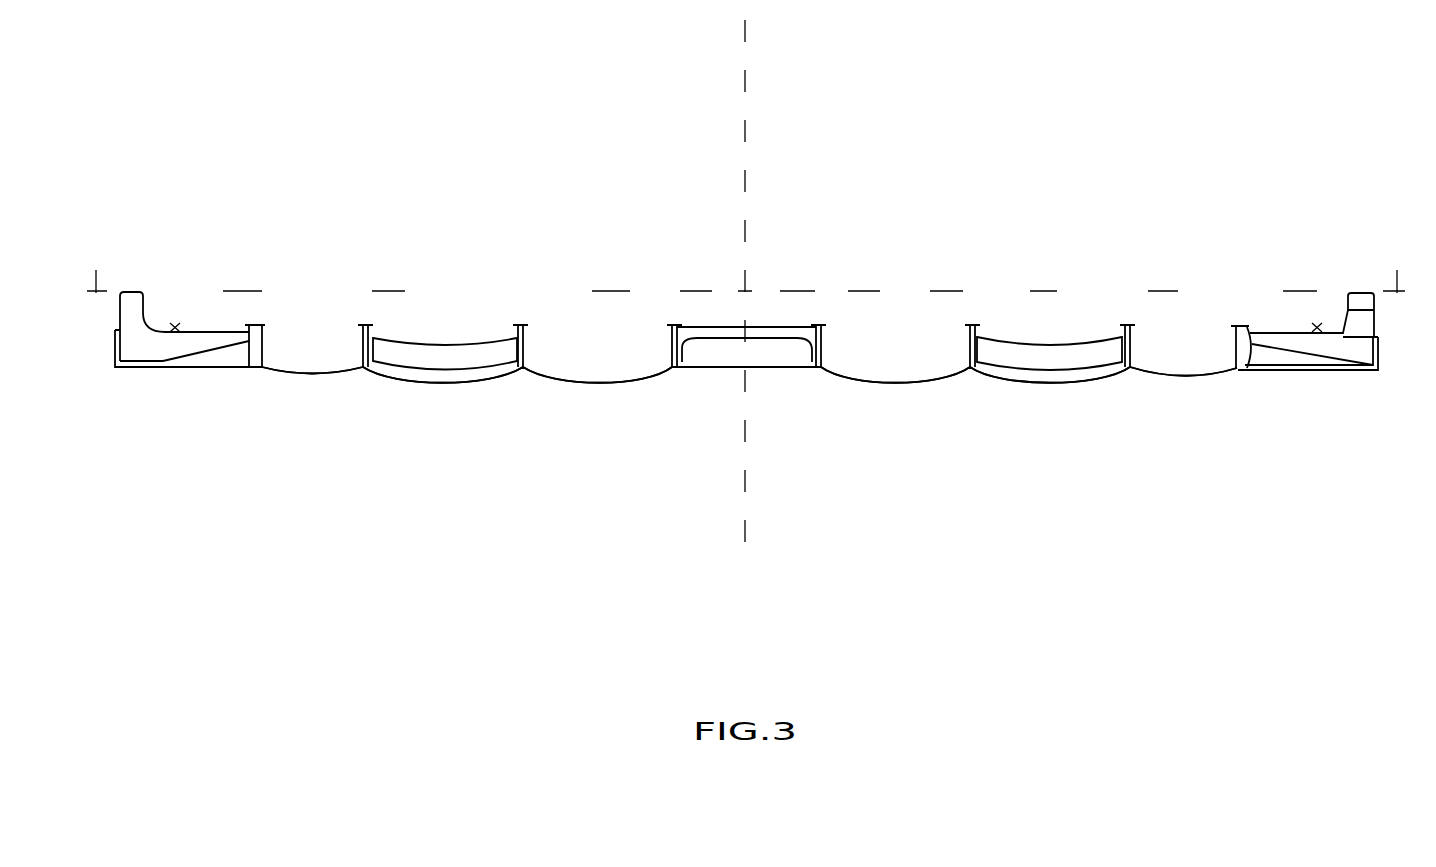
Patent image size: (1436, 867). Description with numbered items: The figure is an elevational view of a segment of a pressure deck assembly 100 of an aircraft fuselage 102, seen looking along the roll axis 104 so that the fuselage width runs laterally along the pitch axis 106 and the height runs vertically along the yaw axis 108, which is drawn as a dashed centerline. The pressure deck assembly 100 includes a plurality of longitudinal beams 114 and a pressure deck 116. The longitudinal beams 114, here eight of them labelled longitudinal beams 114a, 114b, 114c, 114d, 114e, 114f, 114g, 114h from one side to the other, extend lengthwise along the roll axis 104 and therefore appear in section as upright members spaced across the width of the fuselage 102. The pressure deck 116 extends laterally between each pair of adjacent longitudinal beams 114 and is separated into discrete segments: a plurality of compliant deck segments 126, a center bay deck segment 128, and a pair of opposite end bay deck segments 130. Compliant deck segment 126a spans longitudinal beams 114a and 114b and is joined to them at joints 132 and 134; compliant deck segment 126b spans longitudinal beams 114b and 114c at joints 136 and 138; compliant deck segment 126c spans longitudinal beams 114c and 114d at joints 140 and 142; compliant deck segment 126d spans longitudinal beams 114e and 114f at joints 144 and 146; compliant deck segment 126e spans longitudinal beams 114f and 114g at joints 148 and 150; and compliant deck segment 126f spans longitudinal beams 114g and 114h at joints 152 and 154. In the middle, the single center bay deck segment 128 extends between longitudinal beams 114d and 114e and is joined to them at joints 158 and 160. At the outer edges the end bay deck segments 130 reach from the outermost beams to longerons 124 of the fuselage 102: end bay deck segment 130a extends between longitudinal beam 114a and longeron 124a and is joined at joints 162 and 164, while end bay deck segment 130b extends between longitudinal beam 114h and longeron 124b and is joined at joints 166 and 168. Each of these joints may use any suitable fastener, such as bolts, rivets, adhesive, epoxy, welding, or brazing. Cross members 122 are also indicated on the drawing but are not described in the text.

The pressure deck assembly 100 is at (147, 122).
The fuselage 102 is at (502, 110).
The roll axis 104 is at (748, 289).
The pitch axis 106 is at (96, 275).
The yaw axis 108 is at (745, 40).
The longitudinal beams 114 is at (362, 347).
The longitudinal beam 114a is at (1233, 328).
The longitudinal beam 114b is at (1133, 355).
The longitudinal beam 114c is at (968, 347).
The longitudinal beam 114d is at (825, 352).
The longitudinal beam 114e is at (672, 340).
The longitudinal beam 114f is at (527, 335).
The longitudinal beam 114g is at (360, 331).
The longitudinal beam 114h is at (266, 335).
The pressure deck 116 is at (634, 391).
The cross member 122 is at (438, 357).
The longeron 124 is at (122, 370).
The longeron 124a is at (1381, 377).
The longeron 124b is at (116, 365).
The compliant deck segments 126 is at (565, 382).
The compliant deck segment 126a is at (1198, 380).
The compliant deck segment 126b is at (1050, 383).
The compliant deck segment 126c is at (903, 382).
The compliant deck segment 126d is at (602, 385).
The compliant deck segment 126e is at (407, 380).
The compliant deck segment 126f is at (298, 373).
The center bay deck segment 128 is at (775, 372).
The end bay deck segments 130 is at (170, 372).
The end bay deck segment 130a is at (1312, 375).
The end bay deck segment 130b is at (195, 372).
The joint 132 is at (1233, 382).
The joint 134 is at (1125, 382).
The joint 136 is at (1110, 382).
The joint 138 is at (975, 383).
The joint 140 is at (963, 382).
The joint 142 is at (827, 380).
The joint 144 is at (662, 382).
The joint 146 is at (535, 382).
The joint 148 is at (503, 385).
The joint 150 is at (372, 382).
The joint 152 is at (355, 383).
The joint 154 is at (268, 383).
The joint 158 is at (810, 380).
The joint 160 is at (682, 380).
The joint 162 is at (1245, 382).
The joint 164 is at (1353, 380).
The joint 166 is at (247, 383).
The joint 168 is at (140, 385).